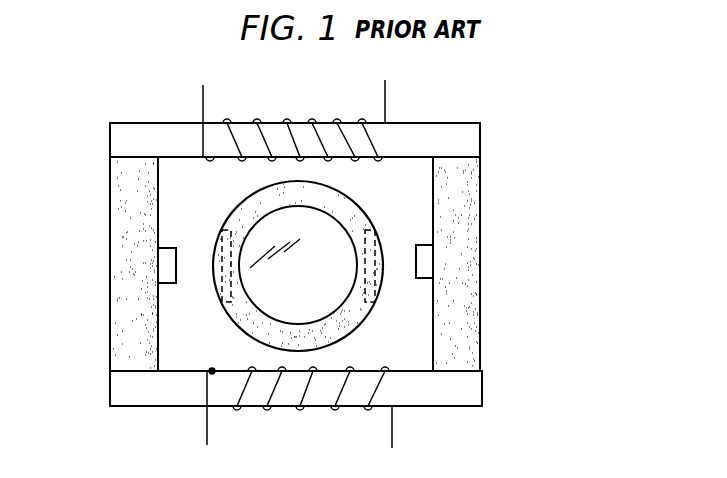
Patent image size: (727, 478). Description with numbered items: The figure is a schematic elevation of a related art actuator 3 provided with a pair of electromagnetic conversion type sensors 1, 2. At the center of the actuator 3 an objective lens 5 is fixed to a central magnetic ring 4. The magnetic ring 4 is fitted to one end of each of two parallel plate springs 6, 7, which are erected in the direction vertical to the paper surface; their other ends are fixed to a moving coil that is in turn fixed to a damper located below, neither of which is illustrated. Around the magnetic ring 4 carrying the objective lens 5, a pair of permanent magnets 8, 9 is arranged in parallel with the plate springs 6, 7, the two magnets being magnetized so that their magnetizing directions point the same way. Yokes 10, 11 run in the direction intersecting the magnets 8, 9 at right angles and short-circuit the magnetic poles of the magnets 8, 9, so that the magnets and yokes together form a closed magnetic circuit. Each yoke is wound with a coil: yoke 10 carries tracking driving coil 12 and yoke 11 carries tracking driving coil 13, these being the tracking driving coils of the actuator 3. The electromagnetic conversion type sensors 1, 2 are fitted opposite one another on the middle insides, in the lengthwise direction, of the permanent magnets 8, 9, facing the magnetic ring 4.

The electromagnetic conversion type sensor 1 is at (162, 266).
The electromagnetic conversion type sensor 2 is at (428, 258).
The actuator 3 is at (325, 268).
The magnetic ring 4 is at (243, 216).
The objective lens 5 is at (325, 236).
The plate spring 6 is at (224, 275).
The plate spring 7 is at (372, 275).
The permanent magnet 8 is at (118, 207).
The permanent magnet 9 is at (473, 312).
The yoke 10 is at (163, 132).
The yoke 11 is at (153, 407).
The tracking driving coil 12 is at (228, 118).
The tracking driving coil 13 is at (240, 408).